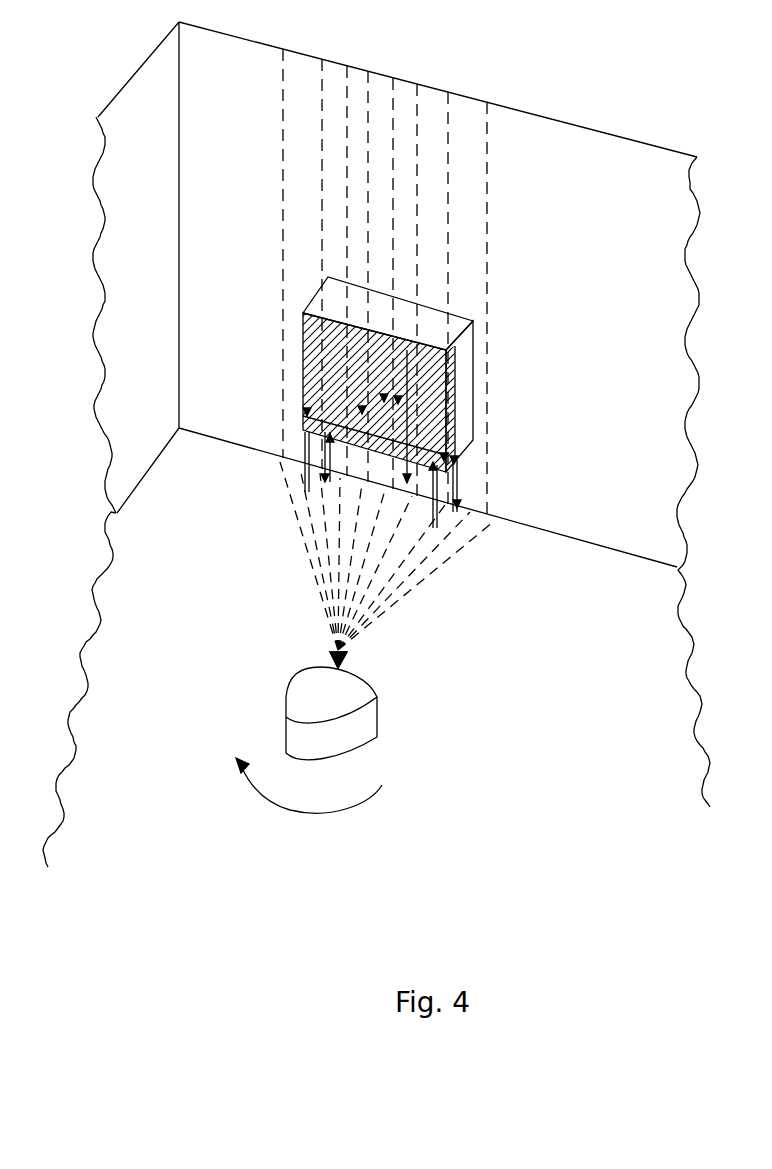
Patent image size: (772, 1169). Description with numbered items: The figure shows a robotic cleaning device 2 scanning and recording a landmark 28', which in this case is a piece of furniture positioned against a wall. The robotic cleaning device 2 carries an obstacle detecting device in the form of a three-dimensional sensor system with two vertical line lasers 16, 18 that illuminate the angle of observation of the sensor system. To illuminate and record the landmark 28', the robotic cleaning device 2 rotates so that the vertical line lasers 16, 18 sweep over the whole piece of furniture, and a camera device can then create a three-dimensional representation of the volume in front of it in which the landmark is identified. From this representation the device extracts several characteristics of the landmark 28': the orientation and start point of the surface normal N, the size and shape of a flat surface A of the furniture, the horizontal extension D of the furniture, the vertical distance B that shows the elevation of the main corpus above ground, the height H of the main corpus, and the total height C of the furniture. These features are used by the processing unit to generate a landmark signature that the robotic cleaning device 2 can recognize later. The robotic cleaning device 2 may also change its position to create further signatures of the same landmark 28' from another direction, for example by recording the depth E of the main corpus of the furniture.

The landmark 28' is at (451, 271).
The surface normal N is at (364, 406).
The total height C is at (405, 347).
The surface A is at (307, 408).
The depth E is at (458, 349).
The height of the main corpus H is at (461, 395).
The vertical distance B is at (307, 468).
The horizontal extension D is at (440, 473).
The line laser 16 is at (310, 642).
The line laser 18 is at (310, 642).
The robotic cleaning device 2 is at (402, 724).